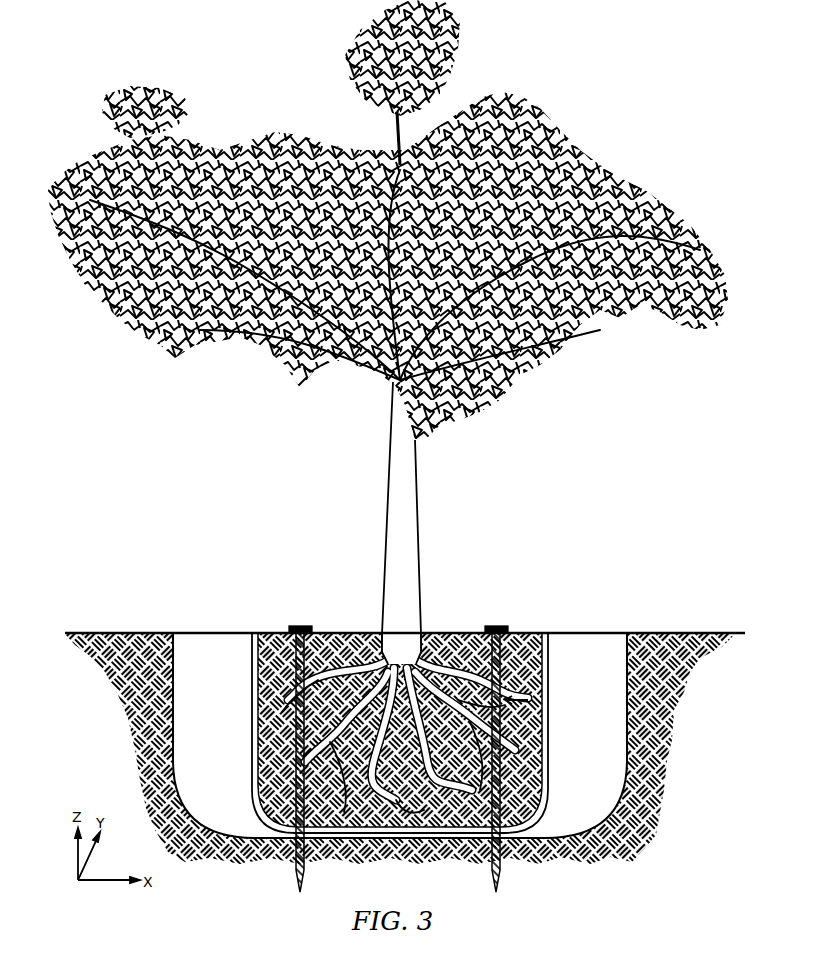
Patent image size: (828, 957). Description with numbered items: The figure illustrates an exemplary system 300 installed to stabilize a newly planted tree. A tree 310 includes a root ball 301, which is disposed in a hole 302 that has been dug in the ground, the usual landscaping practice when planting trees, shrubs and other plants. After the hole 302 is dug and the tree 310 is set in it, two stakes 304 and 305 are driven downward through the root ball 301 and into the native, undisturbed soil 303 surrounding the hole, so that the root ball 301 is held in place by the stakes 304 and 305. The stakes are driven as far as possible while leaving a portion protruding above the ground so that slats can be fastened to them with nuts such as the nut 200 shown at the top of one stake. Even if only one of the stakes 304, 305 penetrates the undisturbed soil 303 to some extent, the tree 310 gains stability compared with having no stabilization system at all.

The system 300 is at (405, 598).
The tree 310 is at (412, 510).
The nut 200 is at (498, 628).
The root ball 301 is at (536, 634).
The hole 302 is at (604, 721).
The undisturbed soil 303 is at (400, 749).
The stake 304 is at (303, 874).
The stake 305 is at (498, 872).